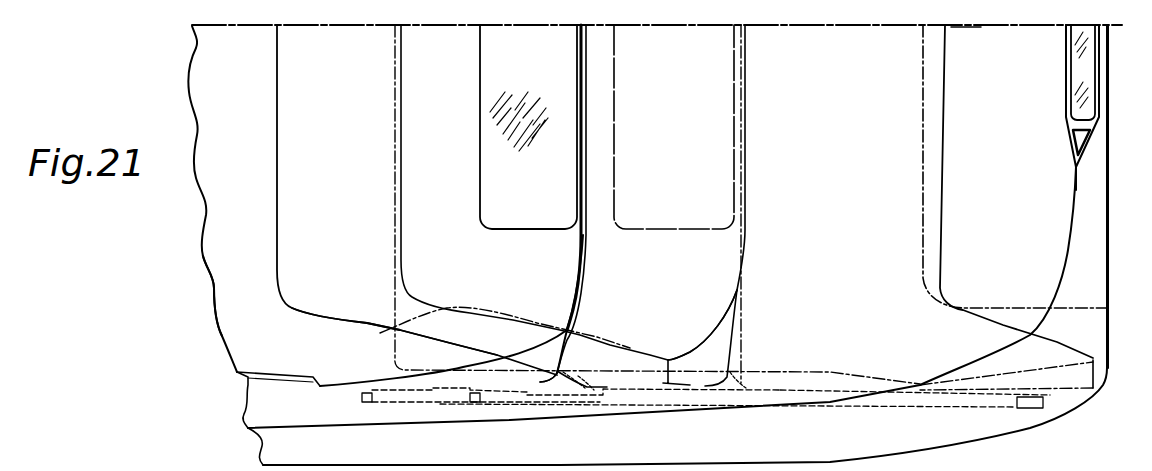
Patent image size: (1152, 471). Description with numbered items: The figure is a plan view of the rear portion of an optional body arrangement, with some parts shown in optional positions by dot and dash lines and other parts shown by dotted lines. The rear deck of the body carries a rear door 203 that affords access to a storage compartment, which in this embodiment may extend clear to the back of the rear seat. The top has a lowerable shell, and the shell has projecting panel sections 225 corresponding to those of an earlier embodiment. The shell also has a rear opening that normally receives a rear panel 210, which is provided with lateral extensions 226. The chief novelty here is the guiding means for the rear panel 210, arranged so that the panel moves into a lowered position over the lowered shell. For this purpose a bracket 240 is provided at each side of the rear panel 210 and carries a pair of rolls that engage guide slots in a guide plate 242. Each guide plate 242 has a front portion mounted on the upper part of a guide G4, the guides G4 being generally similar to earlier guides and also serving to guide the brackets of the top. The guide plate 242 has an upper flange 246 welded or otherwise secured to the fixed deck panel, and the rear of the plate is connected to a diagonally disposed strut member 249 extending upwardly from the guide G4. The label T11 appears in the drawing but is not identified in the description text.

The rear door 203 is at (1035, 107).
The rear panel 210 is at (380, 333).
The projecting panel sections 225 is at (460, 380).
The lateral extensions 226 is at (544, 362).
The bracket 240 is at (630, 347).
The guide plate 242 is at (593, 340).
The upper flange 246 is at (688, 325).
The strut member 249 is at (664, 408).
The side frame member T11 is at (222, 297).
The guide G4 is at (877, 396).